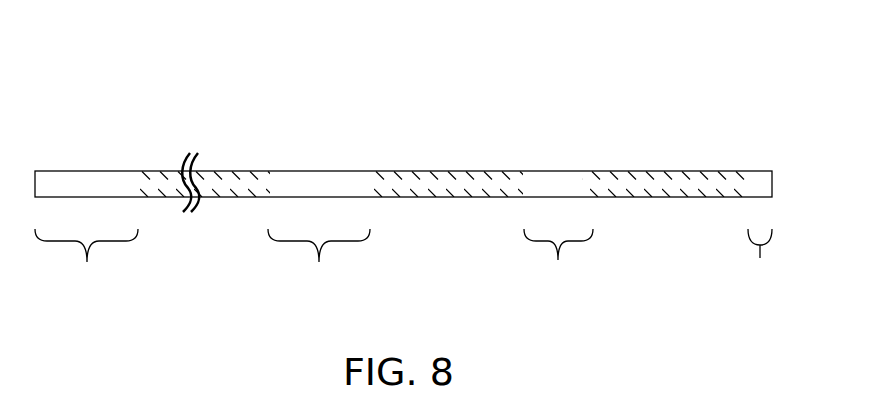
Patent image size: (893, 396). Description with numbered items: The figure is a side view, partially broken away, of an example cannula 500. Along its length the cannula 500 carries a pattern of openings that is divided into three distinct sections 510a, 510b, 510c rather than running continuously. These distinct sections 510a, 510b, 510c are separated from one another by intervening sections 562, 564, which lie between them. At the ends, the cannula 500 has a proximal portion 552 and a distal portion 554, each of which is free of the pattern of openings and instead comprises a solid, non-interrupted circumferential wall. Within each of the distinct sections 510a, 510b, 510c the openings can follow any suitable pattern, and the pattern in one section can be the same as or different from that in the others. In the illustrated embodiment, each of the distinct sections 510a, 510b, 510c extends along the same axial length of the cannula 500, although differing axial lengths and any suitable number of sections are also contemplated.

The cannula 500 is at (170, 105).
The distinct section 510a is at (250, 165).
The distinct section 510b is at (455, 165).
The distinct section 510c is at (650, 165).
The proximal portion 552 is at (86, 263).
The distal portion 554 is at (764, 263).
The intervening section 562 is at (319, 263).
The intervening section 564 is at (558, 263).